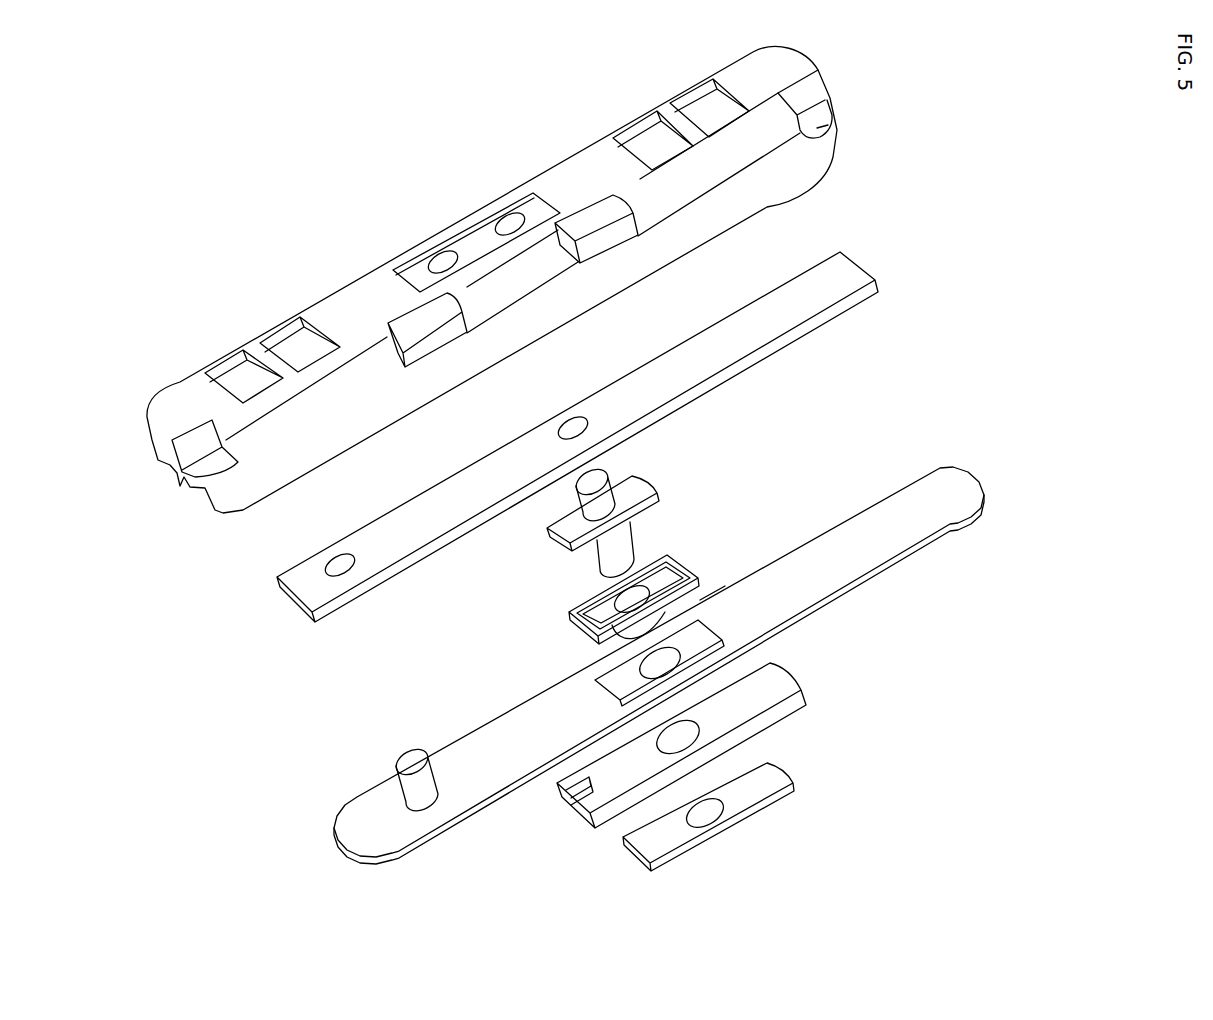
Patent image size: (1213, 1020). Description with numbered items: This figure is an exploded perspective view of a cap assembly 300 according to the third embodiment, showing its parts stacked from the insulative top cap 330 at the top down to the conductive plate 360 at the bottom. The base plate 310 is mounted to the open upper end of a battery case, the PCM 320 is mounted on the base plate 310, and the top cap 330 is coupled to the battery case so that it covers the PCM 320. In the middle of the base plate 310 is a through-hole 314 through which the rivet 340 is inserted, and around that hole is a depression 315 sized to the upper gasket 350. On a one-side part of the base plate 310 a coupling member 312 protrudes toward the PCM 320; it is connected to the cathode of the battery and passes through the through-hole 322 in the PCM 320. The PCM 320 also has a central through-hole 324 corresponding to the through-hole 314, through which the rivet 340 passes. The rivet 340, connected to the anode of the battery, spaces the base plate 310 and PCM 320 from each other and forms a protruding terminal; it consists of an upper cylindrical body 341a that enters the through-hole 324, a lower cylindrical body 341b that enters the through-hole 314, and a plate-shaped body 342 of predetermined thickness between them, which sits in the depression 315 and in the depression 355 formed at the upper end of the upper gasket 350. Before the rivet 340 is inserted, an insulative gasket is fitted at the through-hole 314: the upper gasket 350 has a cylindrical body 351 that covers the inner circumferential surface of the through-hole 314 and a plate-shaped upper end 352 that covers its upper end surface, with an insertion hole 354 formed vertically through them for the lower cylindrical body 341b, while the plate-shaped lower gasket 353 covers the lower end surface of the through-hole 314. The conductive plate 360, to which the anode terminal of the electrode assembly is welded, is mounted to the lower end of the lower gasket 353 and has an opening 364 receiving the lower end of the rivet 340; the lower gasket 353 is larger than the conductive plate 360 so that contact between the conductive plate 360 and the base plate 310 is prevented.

The cap assembly 300 is at (203, 94).
The base plate 310 is at (990, 477).
The coupling member 312 is at (396, 762).
The through-hole (c) 314 is at (648, 664).
The depression 315 is at (594, 681).
The PCM 320 is at (883, 257).
The through-hole (a) 322 is at (325, 566).
The through-hole (b) 324 is at (575, 422).
The top cap 330 is at (843, 98).
The rivet 340 is at (612, 507).
The upper cylindrical body 341a is at (556, 537).
The lower cylindrical body 341b is at (600, 568).
The plate-shaped body 342 is at (572, 552).
The upper gasket 350 is at (718, 561).
The cylindrical body 351 is at (697, 565).
The upper end 352 is at (714, 592).
The lower gasket 353 is at (803, 692).
The insertion hole 354 is at (640, 592).
The depression 355 is at (667, 560).
The conductive plate 360 is at (803, 763).
The opening 364 is at (713, 813).